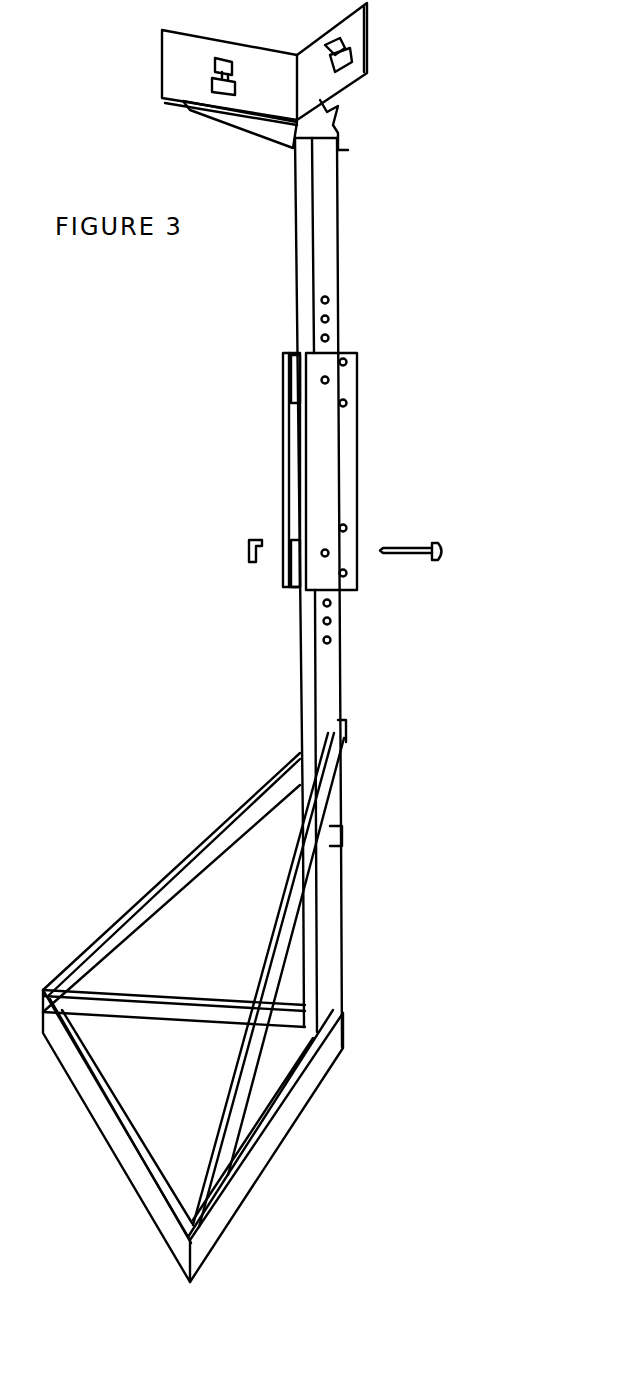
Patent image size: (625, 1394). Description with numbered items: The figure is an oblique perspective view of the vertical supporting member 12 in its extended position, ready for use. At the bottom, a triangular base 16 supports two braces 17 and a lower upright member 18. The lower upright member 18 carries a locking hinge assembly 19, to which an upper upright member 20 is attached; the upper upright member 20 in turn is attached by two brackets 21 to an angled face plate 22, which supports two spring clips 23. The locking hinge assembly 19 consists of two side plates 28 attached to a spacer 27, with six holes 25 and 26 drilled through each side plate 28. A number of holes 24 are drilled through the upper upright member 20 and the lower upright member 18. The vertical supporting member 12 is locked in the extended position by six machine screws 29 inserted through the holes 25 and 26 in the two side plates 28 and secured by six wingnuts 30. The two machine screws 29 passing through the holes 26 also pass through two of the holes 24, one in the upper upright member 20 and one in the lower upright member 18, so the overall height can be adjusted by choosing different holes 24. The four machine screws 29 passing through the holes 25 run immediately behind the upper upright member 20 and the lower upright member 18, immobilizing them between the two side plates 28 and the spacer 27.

The vertical supporting member 12 is at (293, 711).
The triangular base 16 is at (193, 1136).
The braces 17 is at (163, 895).
The lower upright member 18 is at (340, 898).
The locking hinge assembly 19 is at (331, 471).
The upper upright member 20 is at (320, 223).
The brackets 21 is at (262, 121).
The angled face plate 22 is at (264, 64).
The spring clips 23 is at (340, 42).
The holes 24 is at (329, 337).
The holes 25 is at (347, 363).
The holes 26 is at (302, 348).
The spacer 27 is at (298, 488).
The side plates 28 is at (286, 372).
The machine screws 29 is at (430, 560).
The wingnuts 30 is at (250, 548).